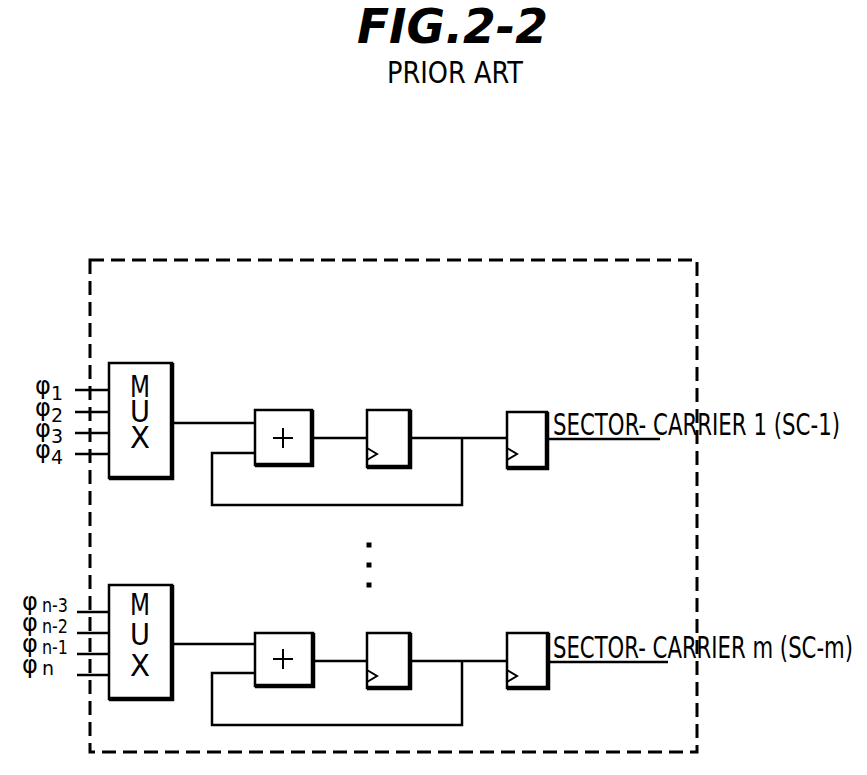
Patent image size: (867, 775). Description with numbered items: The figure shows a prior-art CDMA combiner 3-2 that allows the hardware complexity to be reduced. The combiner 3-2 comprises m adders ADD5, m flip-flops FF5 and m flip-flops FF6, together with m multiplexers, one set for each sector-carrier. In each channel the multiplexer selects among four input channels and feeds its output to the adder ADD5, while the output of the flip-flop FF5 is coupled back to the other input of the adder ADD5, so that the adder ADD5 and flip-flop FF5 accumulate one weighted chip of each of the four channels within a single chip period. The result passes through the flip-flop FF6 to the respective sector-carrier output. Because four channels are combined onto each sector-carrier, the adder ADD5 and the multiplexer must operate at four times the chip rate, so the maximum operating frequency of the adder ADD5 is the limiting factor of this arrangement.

The combiner 3-2 is at (699, 285).
The adder ADD5 is at (286, 410).
The flip-flop FF5 is at (393, 410).
The flip-flop FF6 is at (530, 412).